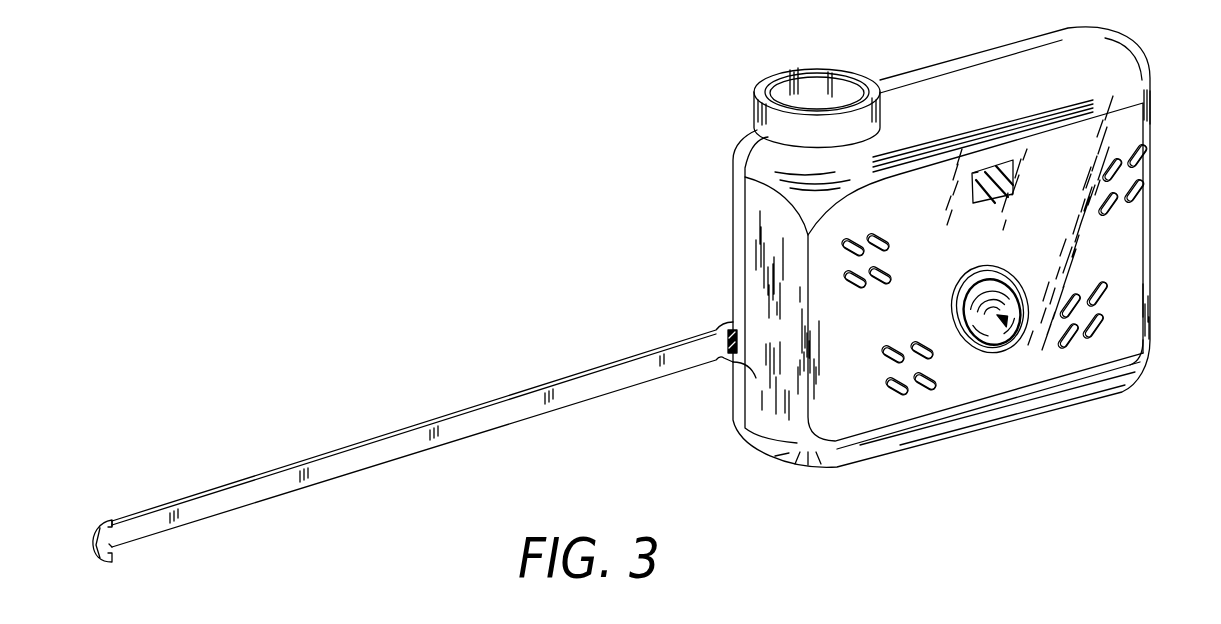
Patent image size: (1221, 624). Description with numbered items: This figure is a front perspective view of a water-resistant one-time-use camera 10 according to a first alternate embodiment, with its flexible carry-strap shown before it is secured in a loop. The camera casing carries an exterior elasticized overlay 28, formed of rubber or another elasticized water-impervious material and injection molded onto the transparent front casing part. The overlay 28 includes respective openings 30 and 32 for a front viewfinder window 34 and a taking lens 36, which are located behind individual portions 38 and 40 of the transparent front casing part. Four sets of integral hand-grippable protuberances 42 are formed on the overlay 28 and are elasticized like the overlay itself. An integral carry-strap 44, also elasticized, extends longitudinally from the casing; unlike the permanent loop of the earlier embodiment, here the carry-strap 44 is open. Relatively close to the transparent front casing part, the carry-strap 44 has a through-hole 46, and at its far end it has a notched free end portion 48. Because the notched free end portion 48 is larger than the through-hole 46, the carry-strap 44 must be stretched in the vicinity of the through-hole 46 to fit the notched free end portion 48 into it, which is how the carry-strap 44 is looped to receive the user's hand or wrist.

The water-resistant one-time-use camera 10 is at (708, 66).
The exterior elasticized overlay 28 is at (1125, 262).
The opening 30 is at (1013, 170).
The opening 32 is at (996, 285).
The front viewfinder window 34 is at (985, 165).
The taking lens 36 is at (1015, 335).
The portion of the transparent front casing part 38 is at (990, 170).
The portion of the transparent front casing part 40 is at (991, 350).
The hand-grippable protuberances 42 is at (847, 268).
The carry-strap 44 is at (508, 390).
The through-hole 46 is at (733, 323).
The notched free end portion 48 is at (110, 522).